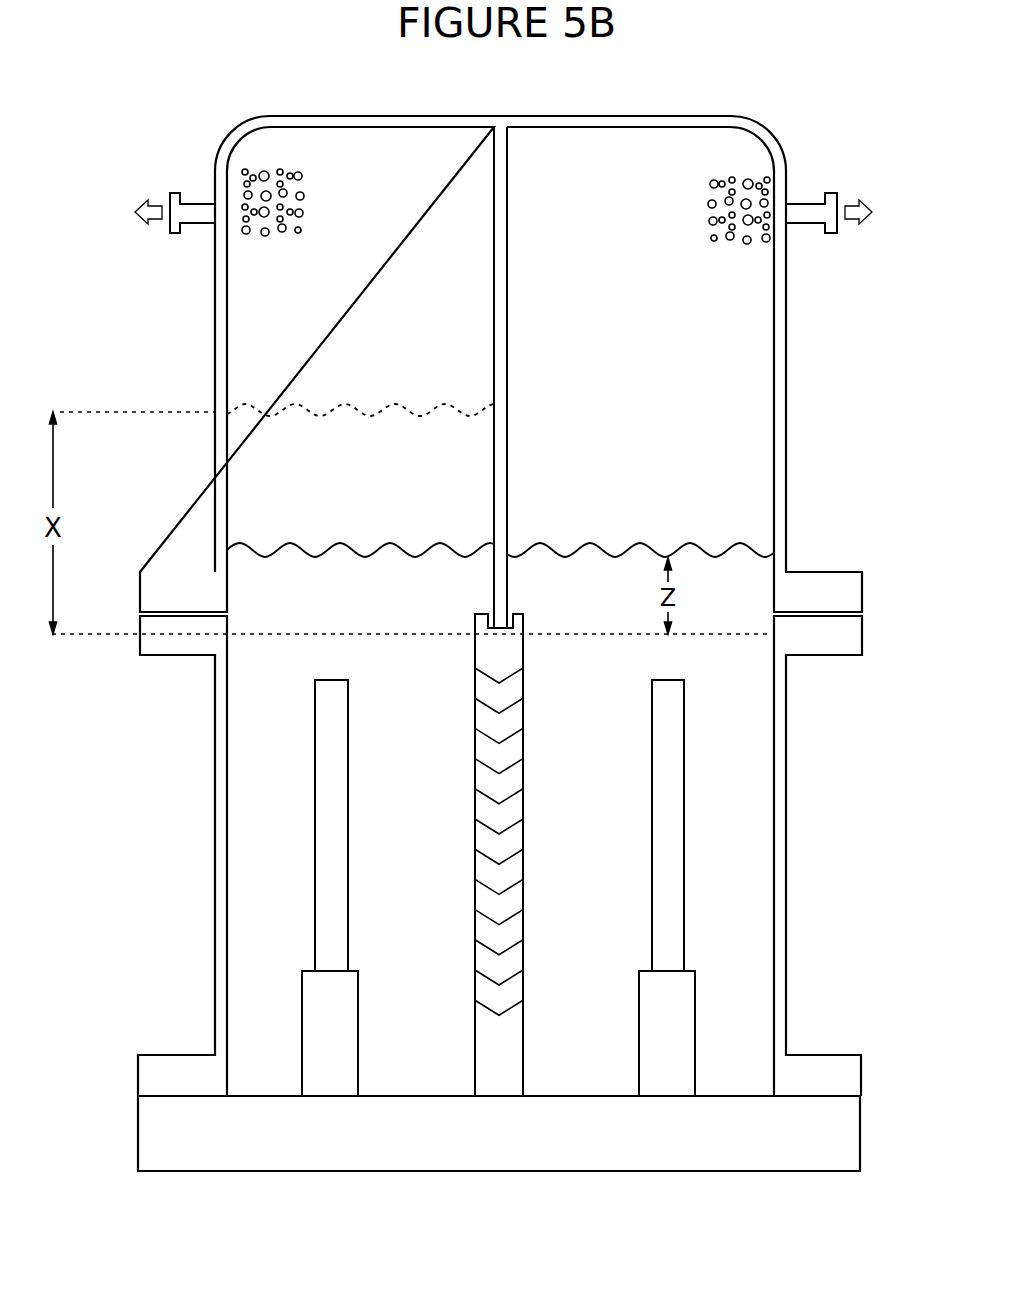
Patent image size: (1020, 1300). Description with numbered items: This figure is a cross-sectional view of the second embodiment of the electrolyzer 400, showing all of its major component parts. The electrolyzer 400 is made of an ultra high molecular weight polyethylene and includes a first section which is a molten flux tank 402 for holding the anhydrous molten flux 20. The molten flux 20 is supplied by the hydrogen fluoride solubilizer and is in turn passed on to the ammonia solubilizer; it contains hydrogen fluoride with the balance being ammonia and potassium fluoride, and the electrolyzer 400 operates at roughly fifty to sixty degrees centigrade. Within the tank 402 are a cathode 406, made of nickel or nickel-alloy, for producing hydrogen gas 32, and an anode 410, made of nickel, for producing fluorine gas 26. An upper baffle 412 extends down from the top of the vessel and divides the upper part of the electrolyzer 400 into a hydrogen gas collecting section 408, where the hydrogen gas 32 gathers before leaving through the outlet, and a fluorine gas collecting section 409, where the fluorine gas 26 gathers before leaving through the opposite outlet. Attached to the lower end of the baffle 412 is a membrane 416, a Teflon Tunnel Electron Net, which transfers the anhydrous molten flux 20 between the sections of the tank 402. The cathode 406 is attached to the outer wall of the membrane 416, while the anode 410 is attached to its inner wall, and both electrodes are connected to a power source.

The electrolyzer 400 is at (503, 104).
The molten flux tank 402 is at (795, 801).
The hydrogen gas 32 is at (168, 181).
The fluorine gas 26 is at (844, 181).
The hydrogen gas collecting section 408 is at (312, 211).
The fluorine gas collecting section 409 is at (702, 215).
The upper baffle 412 is at (520, 455).
The molten flux 20 is at (322, 535).
The cathode 406 is at (354, 726).
The anode 410 is at (642, 831).
The membrane 416 is at (533, 736).